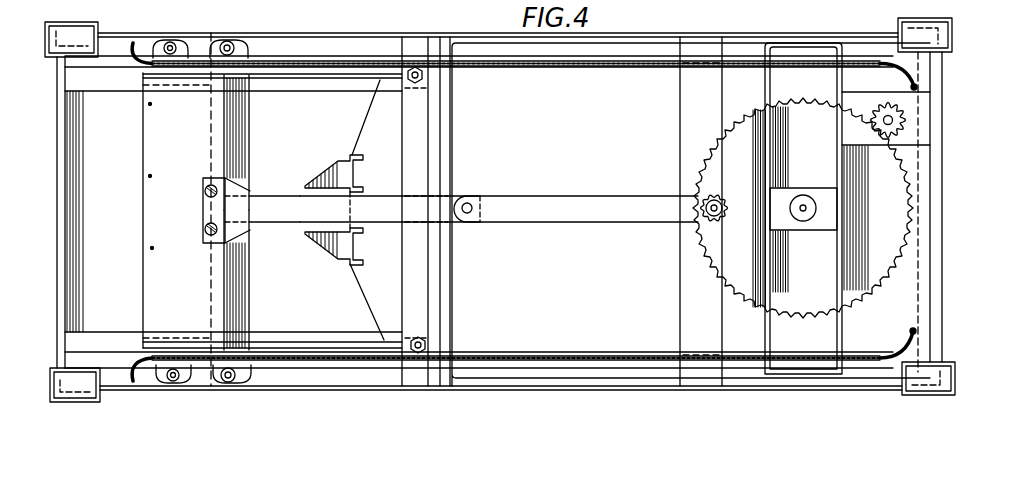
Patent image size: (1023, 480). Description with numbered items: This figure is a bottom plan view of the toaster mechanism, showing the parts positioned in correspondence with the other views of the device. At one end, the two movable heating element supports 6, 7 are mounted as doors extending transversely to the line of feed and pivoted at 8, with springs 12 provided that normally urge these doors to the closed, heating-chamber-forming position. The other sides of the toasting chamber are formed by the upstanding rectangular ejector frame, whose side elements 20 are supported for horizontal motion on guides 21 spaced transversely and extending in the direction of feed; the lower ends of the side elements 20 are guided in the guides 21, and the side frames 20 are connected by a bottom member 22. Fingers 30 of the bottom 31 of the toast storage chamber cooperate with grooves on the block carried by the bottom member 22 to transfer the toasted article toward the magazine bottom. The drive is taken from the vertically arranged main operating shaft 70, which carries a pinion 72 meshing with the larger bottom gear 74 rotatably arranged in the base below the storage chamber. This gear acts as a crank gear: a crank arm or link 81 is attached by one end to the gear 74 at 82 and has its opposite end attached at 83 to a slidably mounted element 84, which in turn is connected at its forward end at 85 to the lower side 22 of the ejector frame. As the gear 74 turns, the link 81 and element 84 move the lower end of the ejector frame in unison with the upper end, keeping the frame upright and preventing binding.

The movable heating element support 6 is at (250, 133).
The movable heating element support 7 is at (247, 288).
The pivot 8 is at (228, 42).
The spring 12 is at (271, 47).
The side element 20 is at (183, 78).
The guide 21 is at (332, 78).
The bottom member 22 is at (167, 276).
The finger 30 is at (332, 166).
The bottom of the toast storage chamber 31 is at (383, 286).
The main operating shaft 70 is at (894, 120).
The pinion 72 is at (905, 122).
The bottom gear 74 is at (912, 186).
The crank arm or link 81 is at (612, 215).
The crank attachment point 82 is at (703, 218).
The pivot connection 83 is at (470, 203).
The slidably mounted element 84 is at (385, 219).
The forward connection 85 is at (205, 228).